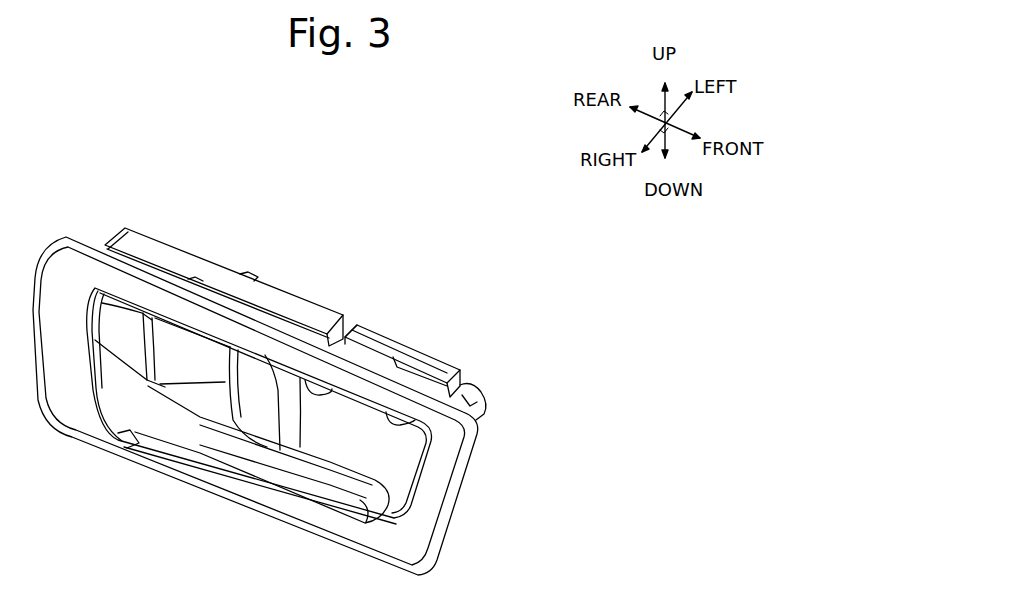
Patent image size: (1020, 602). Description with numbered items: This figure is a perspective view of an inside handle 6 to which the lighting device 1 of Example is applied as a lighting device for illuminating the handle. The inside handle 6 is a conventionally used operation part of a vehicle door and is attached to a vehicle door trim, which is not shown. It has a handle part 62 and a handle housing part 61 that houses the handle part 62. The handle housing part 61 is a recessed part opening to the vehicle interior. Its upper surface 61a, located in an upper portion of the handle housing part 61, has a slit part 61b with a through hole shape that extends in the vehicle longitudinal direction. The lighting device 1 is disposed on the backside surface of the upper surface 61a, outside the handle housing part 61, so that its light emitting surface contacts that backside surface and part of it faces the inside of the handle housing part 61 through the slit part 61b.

The lighting device 1 is at (432, 357).
The inside handle 6 is at (474, 261).
The handle housing part 61 is at (397, 478).
The upper surface 61a is at (304, 372).
The slit part 61b is at (416, 420).
The handle part 62 is at (208, 466).